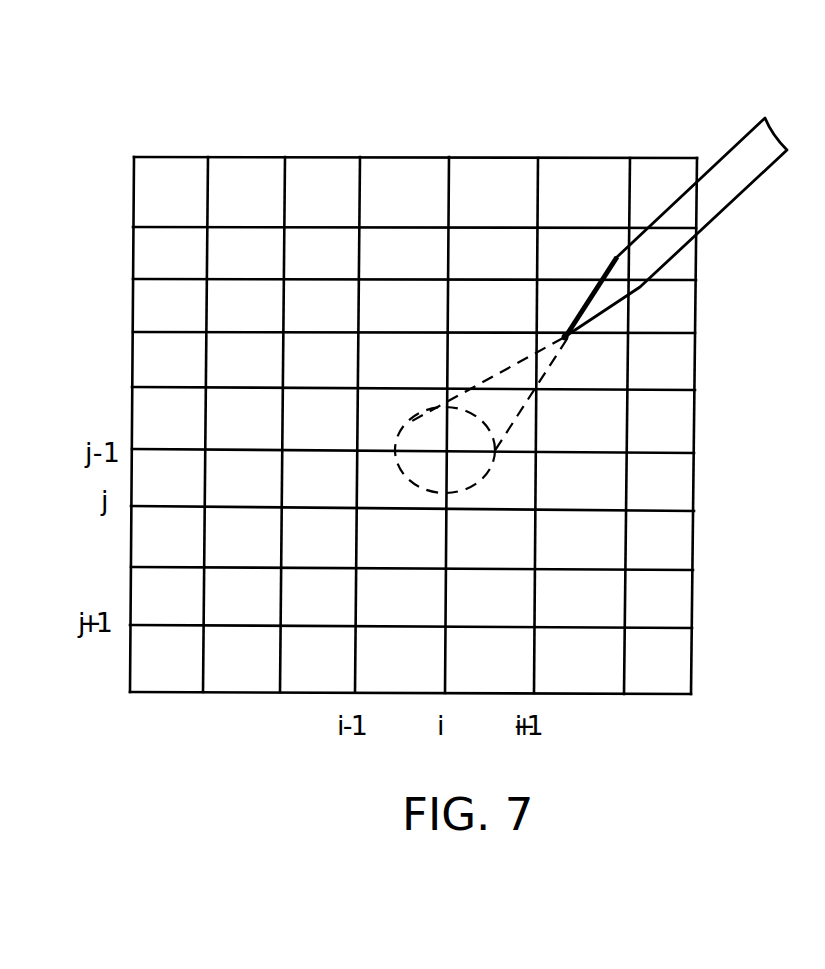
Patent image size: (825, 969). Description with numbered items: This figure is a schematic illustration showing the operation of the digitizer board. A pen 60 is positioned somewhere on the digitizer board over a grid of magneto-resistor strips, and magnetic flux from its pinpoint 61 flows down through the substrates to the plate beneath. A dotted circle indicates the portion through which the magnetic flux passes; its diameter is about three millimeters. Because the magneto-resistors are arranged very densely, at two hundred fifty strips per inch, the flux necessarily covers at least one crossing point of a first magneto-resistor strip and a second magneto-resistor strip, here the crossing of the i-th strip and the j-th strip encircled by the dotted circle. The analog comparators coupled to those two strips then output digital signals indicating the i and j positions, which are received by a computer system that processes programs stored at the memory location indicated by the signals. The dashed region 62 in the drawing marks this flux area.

The pen 60 is at (670, 211).
The pinpoint 61 is at (562, 333).
The projected pen-tip contact region (dashed circle) 62 is at (481, 415).